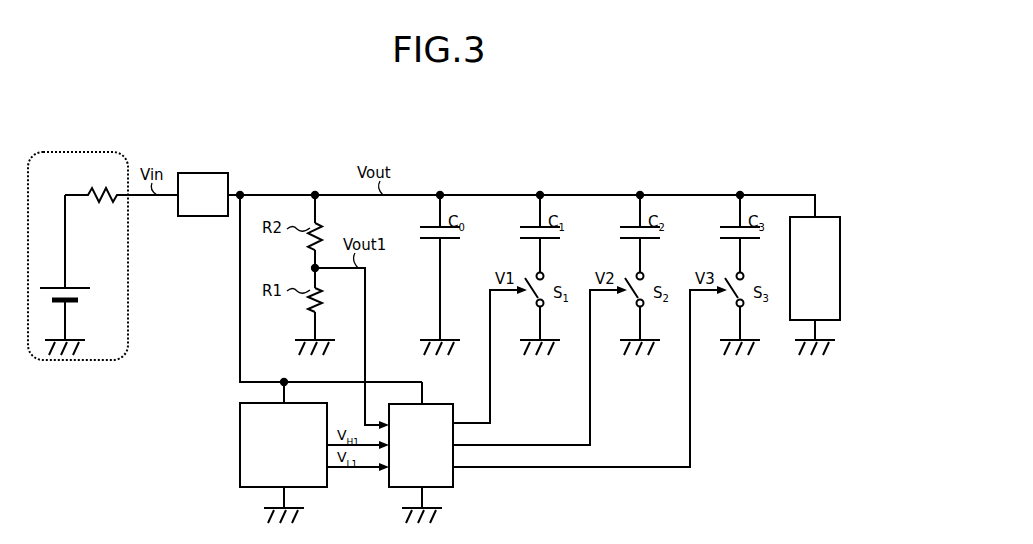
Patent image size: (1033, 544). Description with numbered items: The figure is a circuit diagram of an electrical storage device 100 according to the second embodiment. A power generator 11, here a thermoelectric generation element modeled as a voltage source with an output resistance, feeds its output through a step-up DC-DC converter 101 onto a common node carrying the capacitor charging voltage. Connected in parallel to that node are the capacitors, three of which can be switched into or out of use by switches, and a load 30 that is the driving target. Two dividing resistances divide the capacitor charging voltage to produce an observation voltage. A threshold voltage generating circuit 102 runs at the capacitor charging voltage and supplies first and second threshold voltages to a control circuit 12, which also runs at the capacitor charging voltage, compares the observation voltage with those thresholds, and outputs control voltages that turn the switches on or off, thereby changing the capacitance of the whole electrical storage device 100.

The electrical storage device 100 is at (750, 133).
The power generator 11 is at (75, 152).
The step-up DC-DC converter 101 is at (206, 173).
The load 30 is at (825, 217).
The control circuit 12 is at (440, 404).
The threshold voltage generating circuit 102 is at (240, 447).